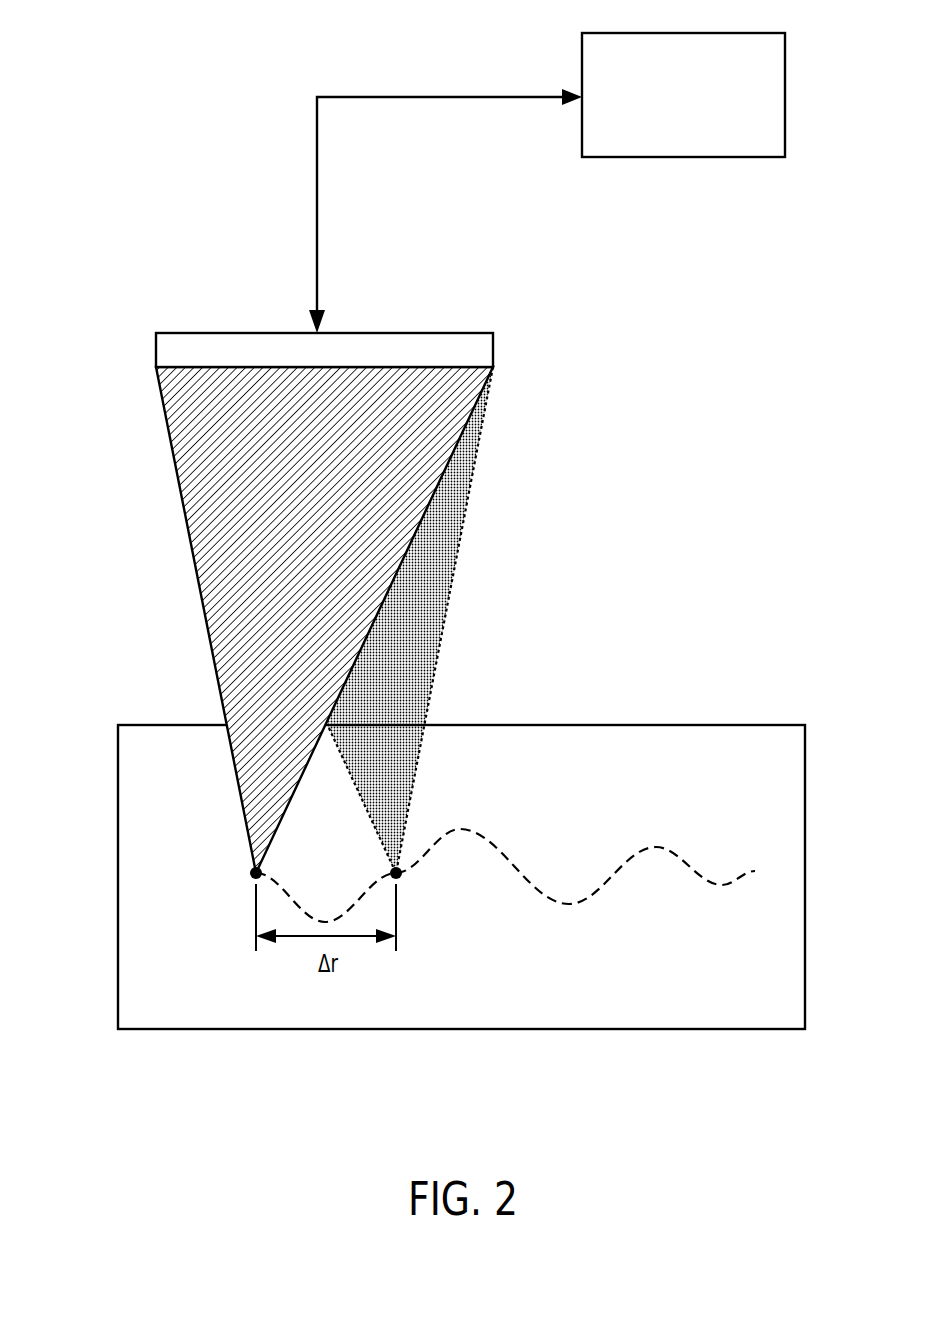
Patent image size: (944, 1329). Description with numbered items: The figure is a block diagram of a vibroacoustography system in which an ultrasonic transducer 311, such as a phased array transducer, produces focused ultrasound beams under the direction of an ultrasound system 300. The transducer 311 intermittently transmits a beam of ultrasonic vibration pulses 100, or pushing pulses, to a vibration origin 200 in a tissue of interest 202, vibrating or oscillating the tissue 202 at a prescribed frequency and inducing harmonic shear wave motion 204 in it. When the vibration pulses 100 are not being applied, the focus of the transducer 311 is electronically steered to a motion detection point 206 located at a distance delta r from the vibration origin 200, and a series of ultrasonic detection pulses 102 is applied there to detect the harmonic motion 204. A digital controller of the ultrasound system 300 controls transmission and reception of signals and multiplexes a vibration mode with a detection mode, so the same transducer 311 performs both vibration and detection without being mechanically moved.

The ultrasonic vibration pulse 100 is at (203, 615).
The ultrasonic detection pulses 102 is at (470, 493).
The vibration origin 200 is at (256, 873).
The tissue of interest 202 is at (734, 999).
The harmonic shear wave motion 204 is at (659, 838).
The motion detection point 206 is at (396, 873).
The ultrasound system 300 is at (683, 157).
The ultrasonic transducer 311 is at (225, 333).